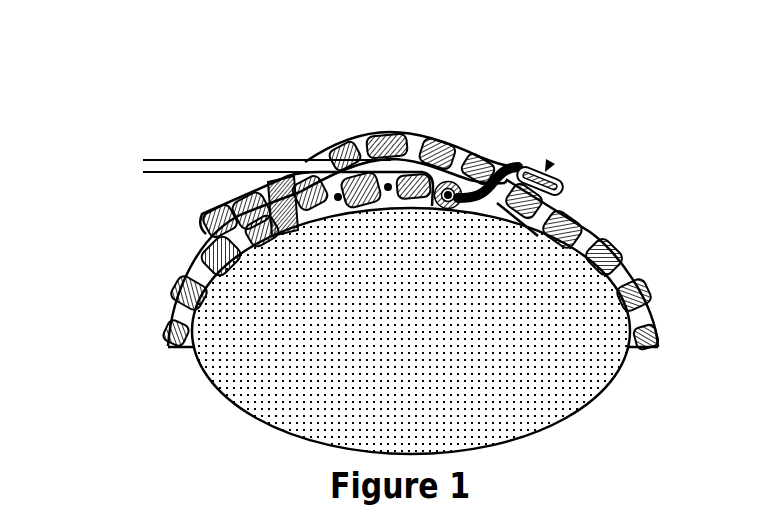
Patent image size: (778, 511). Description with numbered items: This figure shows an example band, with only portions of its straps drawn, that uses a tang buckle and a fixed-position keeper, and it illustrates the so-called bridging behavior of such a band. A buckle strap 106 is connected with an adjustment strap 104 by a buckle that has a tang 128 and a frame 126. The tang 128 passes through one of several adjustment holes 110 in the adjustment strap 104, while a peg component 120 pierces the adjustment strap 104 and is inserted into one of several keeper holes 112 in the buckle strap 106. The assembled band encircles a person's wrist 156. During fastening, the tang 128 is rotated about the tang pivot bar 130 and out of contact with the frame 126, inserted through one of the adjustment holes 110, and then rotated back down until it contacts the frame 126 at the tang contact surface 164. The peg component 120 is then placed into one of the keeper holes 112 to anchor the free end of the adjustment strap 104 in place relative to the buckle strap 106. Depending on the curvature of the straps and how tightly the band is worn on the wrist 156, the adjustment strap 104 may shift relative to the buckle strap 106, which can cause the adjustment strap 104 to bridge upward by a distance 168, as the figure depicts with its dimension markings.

The adjustment strap 104 is at (230, 217).
The buckle strap 106 is at (186, 297).
The adjustment holes 110 is at (583, 242).
The keeper holes 112 is at (362, 146).
The peg component 120 is at (296, 232).
The frame 126 is at (558, 190).
The tang 128 is at (515, 167).
The tang pivot bar 130 is at (450, 197).
The wrist 156 is at (500, 368).
The tang contact surface 164 is at (549, 164).
The bridging distance 168 is at (162, 217).